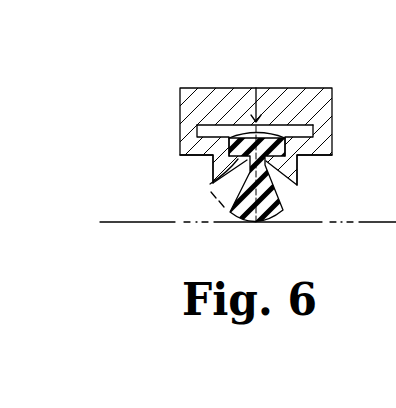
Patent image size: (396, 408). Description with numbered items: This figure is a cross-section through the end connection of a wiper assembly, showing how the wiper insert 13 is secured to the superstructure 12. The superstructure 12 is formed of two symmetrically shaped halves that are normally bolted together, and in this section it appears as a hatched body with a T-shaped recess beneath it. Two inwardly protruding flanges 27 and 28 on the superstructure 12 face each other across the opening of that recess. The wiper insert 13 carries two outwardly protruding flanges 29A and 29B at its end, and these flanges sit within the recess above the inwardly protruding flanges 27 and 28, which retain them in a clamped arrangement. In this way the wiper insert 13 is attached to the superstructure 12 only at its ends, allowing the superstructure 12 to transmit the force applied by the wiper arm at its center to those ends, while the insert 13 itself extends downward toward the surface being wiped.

The superstructure 12 is at (232, 105).
The wiper insert 13 is at (242, 159).
The inwardly protruding flange 27 is at (207, 158).
The inwardly protruding flange 28 is at (311, 156).
The outwardly protruding flange 29A is at (203, 126).
The outwardly protruding flange 29B is at (295, 133).